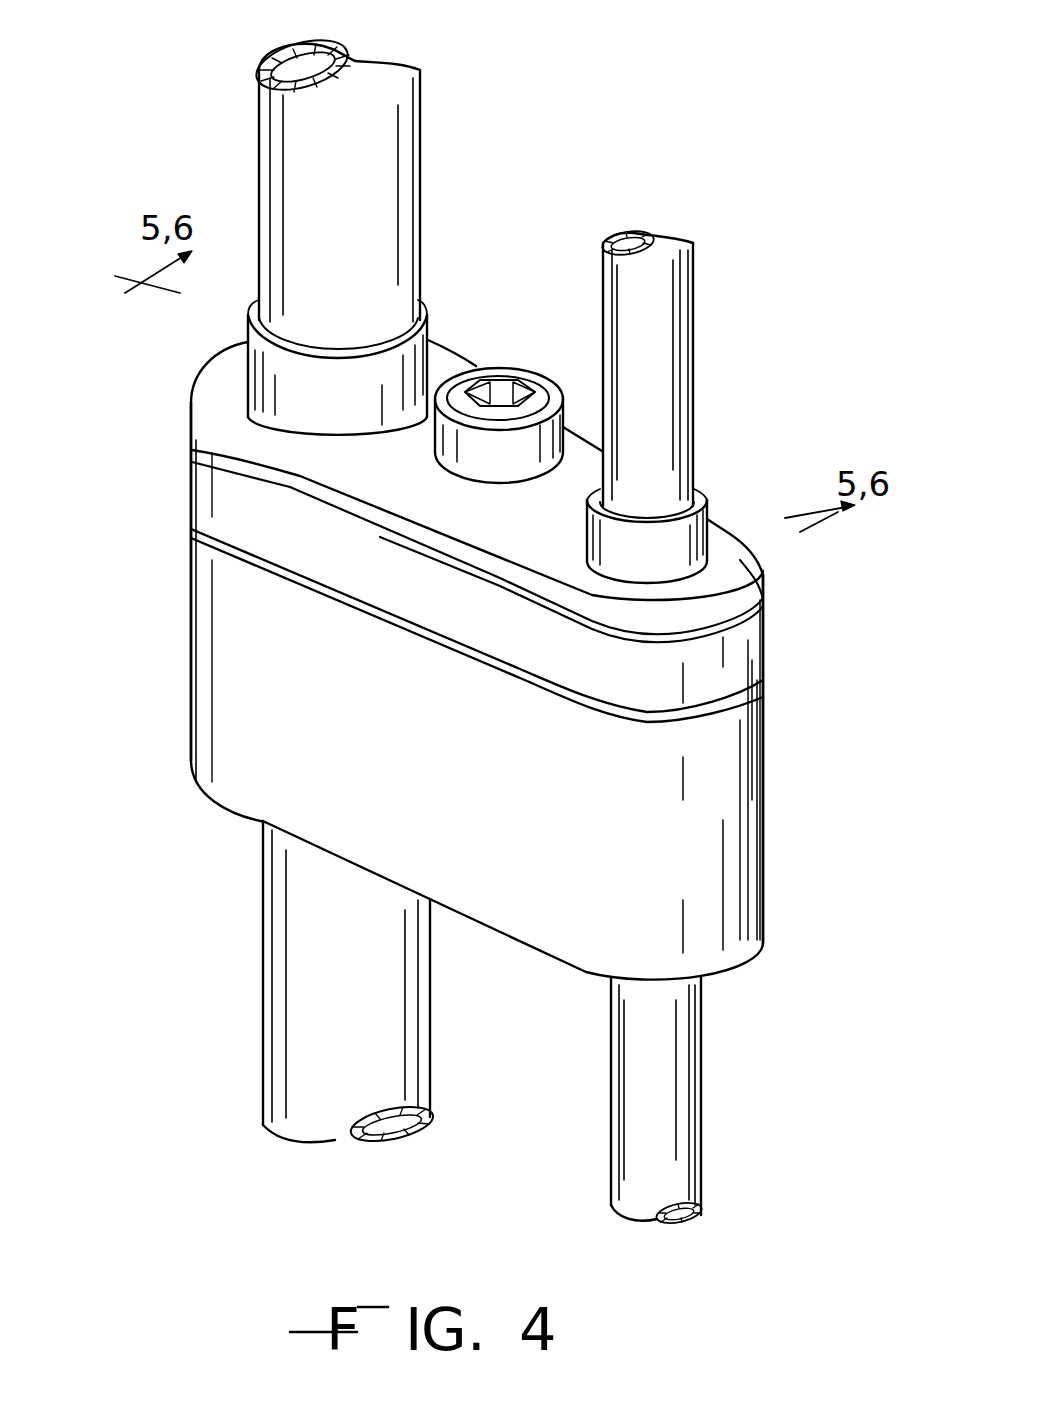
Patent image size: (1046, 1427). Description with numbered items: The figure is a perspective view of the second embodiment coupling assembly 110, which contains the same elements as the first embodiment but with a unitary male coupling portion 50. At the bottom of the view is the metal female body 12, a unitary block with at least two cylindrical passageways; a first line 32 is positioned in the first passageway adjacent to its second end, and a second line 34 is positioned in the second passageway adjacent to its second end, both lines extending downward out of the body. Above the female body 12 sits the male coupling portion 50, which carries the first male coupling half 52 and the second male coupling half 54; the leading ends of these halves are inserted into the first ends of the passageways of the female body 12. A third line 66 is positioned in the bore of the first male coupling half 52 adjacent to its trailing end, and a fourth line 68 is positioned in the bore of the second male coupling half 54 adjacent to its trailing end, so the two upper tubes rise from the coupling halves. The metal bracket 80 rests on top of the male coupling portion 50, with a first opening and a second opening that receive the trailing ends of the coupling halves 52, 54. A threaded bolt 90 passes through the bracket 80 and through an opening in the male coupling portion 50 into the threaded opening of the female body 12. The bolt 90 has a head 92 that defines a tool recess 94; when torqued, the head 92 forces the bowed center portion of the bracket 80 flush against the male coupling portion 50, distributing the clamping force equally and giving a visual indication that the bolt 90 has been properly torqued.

The female body 12 is at (224, 746).
The first line 32 is at (701, 1140).
The second line 34 is at (262, 1097).
The male coupling portion 50 is at (767, 617).
The first male coupling half 52 is at (710, 497).
The second male coupling half 54 is at (287, 380).
The third line 66 is at (693, 277).
The fourth line 68 is at (425, 87).
The bracket 80 is at (213, 418).
The threaded bolt 90 is at (485, 365).
The head 92 is at (490, 467).
The tool recess 94 is at (500, 392).
The second embodiment coupling assembly 110 is at (555, 168).